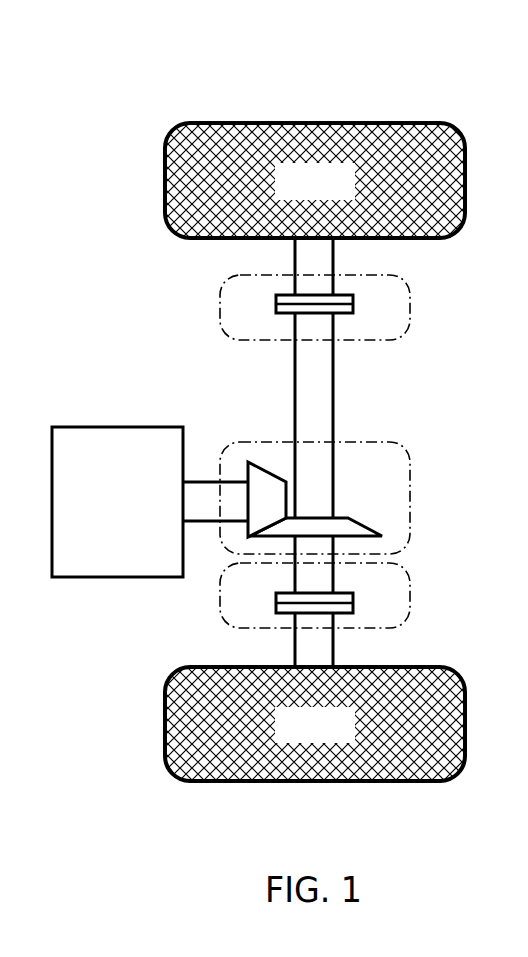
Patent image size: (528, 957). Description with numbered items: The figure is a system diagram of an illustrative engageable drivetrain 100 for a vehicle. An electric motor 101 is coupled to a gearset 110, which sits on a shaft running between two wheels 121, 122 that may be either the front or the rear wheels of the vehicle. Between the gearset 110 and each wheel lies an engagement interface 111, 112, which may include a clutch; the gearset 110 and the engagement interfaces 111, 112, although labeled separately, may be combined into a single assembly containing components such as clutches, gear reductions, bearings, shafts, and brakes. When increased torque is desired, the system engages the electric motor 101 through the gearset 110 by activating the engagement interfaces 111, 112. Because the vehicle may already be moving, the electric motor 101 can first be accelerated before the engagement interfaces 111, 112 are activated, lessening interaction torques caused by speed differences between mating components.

The engageable drivetrain 100 is at (322, 40).
The electric motor 101 is at (98, 514).
The gearset 110 is at (410, 480).
The engagement interface 111 is at (412, 297).
The engagement interface 112 is at (410, 583).
The wheel 121 is at (295, 192).
The wheel 122 is at (295, 736).